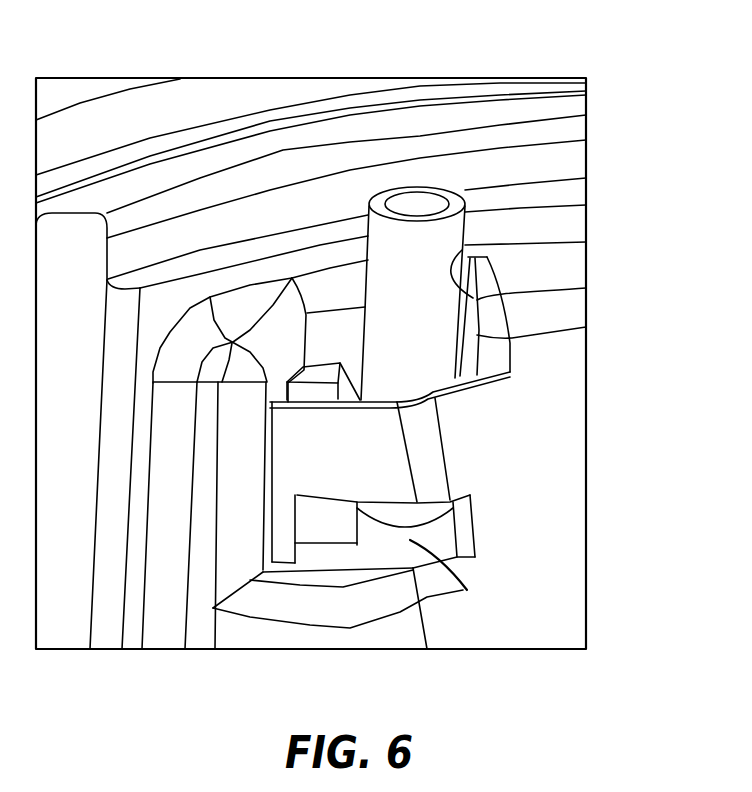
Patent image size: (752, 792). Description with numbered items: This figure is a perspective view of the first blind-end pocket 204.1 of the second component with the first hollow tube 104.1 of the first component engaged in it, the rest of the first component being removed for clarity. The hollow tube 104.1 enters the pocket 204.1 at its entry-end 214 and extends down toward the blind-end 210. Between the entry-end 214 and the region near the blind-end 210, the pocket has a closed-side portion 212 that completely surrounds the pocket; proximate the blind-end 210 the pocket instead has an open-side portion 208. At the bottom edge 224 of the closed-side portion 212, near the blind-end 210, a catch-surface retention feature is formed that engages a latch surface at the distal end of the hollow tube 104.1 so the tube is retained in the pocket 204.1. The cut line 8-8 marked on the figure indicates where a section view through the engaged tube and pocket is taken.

The first hollow tube 104.1 is at (415, 190).
The first blind-end pocket 204.1 is at (347, 338).
The cut line 8- 8 is at (442, 213).
The entry-end 214 is at (559, 261).
The closed-side portion 212 is at (471, 459).
The open-side portion 208 is at (488, 507).
The blind-end 210 is at (504, 622).
The bottom edge 224 is at (338, 600).